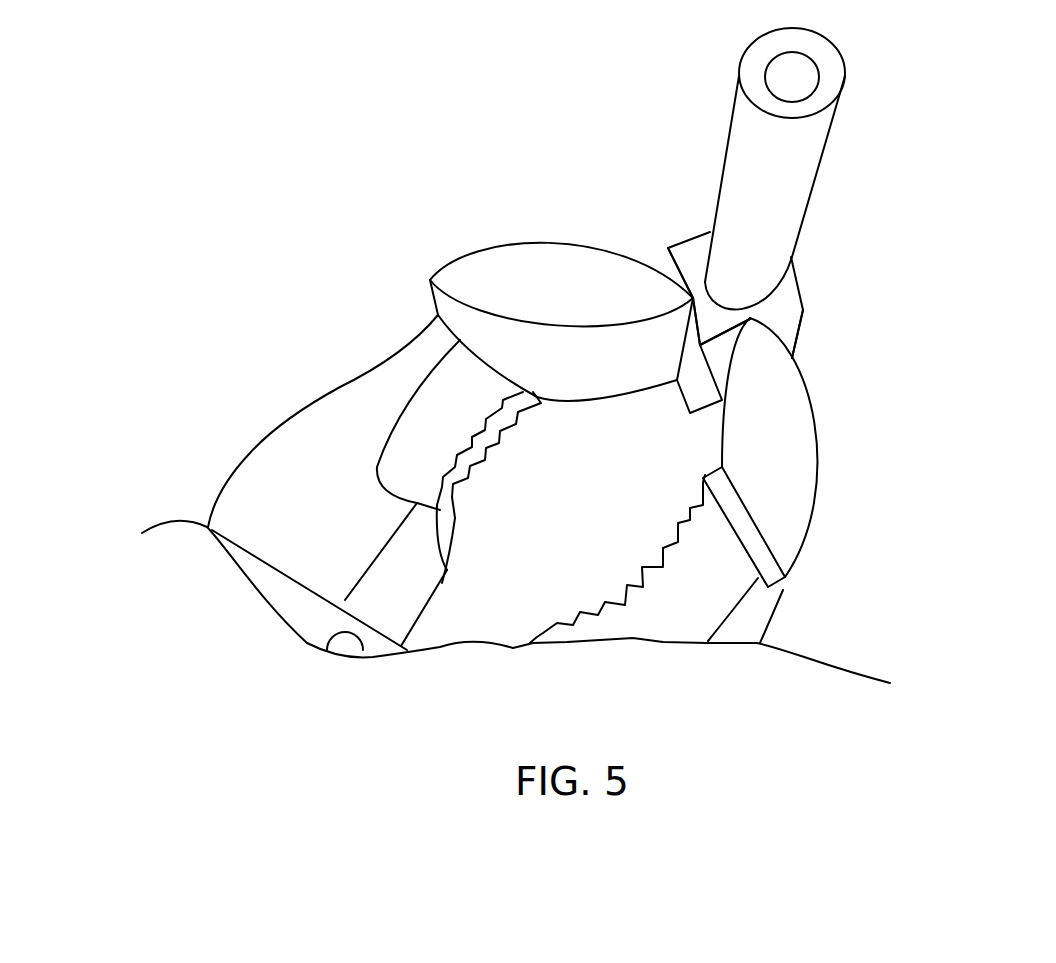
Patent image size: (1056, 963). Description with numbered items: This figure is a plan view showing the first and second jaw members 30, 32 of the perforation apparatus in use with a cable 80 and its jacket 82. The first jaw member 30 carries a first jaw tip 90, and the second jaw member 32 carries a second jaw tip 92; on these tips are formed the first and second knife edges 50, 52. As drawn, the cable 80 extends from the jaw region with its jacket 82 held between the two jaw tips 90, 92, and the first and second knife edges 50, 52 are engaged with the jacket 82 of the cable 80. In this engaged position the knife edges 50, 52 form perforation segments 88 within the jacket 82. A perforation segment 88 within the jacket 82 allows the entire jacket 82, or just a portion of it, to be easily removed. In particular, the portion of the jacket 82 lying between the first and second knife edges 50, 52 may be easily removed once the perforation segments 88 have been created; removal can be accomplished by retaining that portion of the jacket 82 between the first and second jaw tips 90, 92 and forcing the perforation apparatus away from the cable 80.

The first jaw member 30 is at (395, 372).
The second jaw member 32 is at (713, 593).
The first knife edge 50 is at (693, 298).
The second knife edge 52 is at (750, 318).
The cable 80 is at (810, 183).
The jacket 82 is at (803, 310).
The perforation segment 88 is at (695, 305).
The first jaw tip 90 is at (553, 277).
The second jaw tip 92 is at (795, 497).